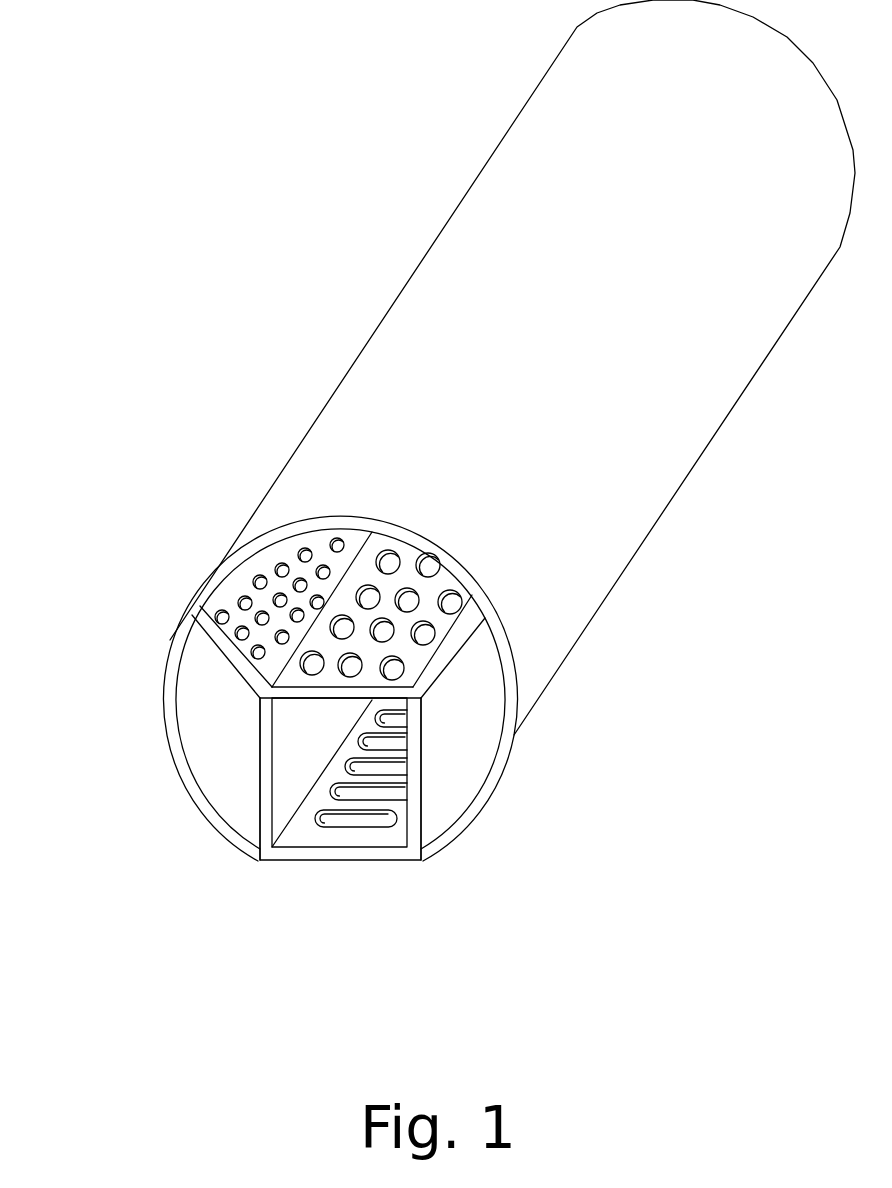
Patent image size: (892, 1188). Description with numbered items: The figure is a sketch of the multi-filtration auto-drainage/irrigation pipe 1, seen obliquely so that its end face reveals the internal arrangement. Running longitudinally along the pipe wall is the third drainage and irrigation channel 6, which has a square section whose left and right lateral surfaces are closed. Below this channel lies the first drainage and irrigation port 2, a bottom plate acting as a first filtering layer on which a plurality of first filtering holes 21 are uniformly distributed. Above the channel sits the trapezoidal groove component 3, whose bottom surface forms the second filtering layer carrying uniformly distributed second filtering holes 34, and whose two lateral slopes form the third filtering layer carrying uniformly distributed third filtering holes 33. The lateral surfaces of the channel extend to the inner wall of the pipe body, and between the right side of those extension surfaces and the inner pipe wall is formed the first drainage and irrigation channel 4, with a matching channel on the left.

The multi-filtration auto-drainage/irrigation pipe 1 is at (516, 318).
The first drainage and irrigation port 2 is at (373, 855).
The first filtering hole 21 is at (345, 818).
The trapezoidal groove component 3 is at (220, 649).
The third filtering hole 33 is at (243, 601).
The second filtering hole 34 is at (422, 632).
The first drainage and irrigation channel 4 is at (228, 733).
The third drainage and irrigation channel 6 is at (303, 755).